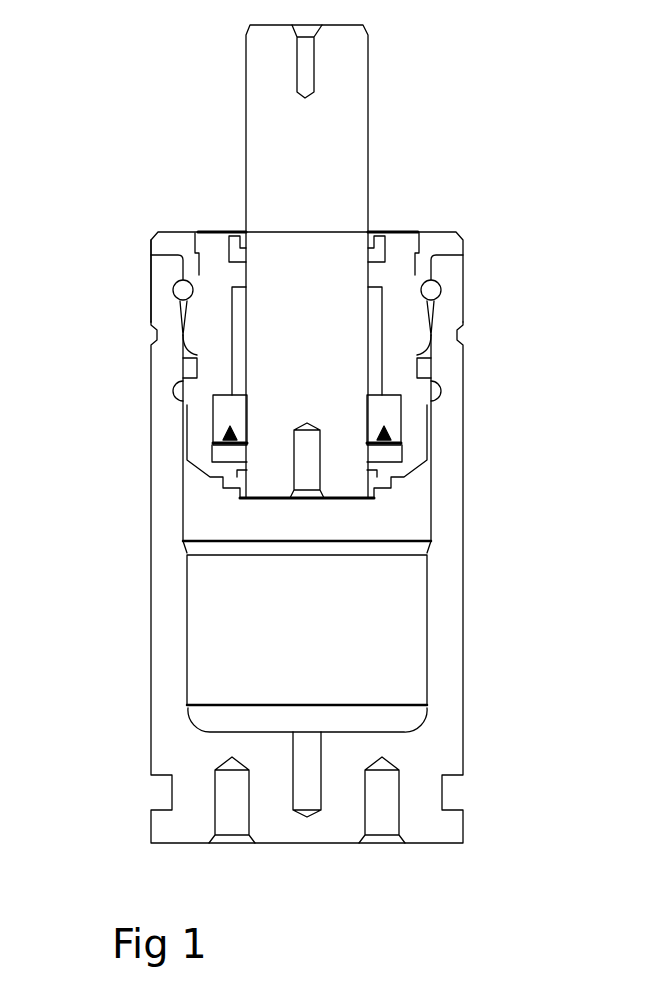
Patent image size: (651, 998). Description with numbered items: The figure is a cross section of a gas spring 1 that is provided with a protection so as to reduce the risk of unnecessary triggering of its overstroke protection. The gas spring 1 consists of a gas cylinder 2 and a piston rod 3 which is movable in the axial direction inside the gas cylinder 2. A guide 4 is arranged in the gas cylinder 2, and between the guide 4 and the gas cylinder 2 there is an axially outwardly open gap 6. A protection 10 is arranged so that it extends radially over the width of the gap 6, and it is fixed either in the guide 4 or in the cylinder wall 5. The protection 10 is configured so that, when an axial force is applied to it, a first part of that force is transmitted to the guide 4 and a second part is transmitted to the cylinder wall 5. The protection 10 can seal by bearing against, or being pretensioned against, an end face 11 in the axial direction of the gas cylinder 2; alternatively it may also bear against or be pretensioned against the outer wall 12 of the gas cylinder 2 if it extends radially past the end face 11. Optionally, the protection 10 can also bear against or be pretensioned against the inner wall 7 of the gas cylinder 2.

The gas spring 1 is at (310, 429).
The gas cylinder 2 is at (465, 560).
The piston rod 3 is at (368, 152).
The guide 4 is at (402, 325).
The cylinder wall 5 is at (445, 437).
The gap 6 is at (433, 257).
The inner wall 7 is at (427, 617).
The protection 10 is at (463, 248).
The end face 11 is at (163, 255).
The outer wall 12 is at (143, 272).